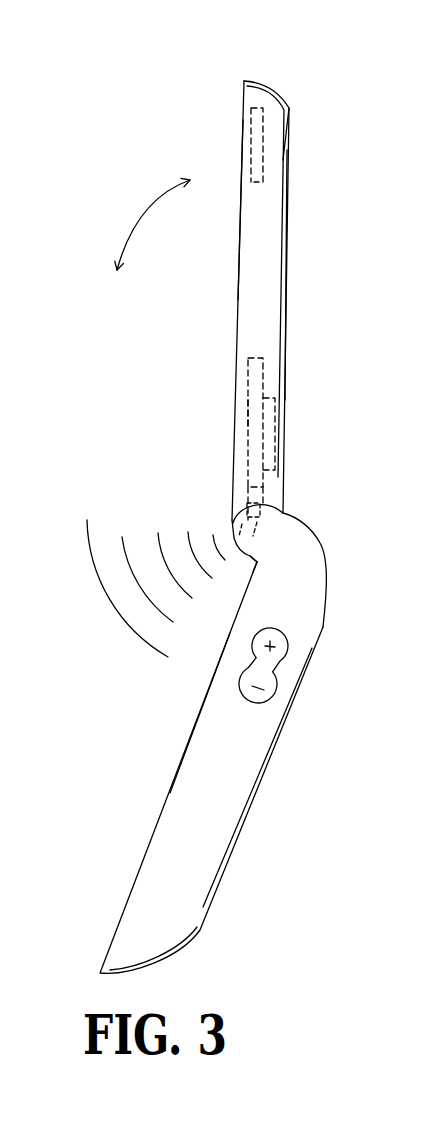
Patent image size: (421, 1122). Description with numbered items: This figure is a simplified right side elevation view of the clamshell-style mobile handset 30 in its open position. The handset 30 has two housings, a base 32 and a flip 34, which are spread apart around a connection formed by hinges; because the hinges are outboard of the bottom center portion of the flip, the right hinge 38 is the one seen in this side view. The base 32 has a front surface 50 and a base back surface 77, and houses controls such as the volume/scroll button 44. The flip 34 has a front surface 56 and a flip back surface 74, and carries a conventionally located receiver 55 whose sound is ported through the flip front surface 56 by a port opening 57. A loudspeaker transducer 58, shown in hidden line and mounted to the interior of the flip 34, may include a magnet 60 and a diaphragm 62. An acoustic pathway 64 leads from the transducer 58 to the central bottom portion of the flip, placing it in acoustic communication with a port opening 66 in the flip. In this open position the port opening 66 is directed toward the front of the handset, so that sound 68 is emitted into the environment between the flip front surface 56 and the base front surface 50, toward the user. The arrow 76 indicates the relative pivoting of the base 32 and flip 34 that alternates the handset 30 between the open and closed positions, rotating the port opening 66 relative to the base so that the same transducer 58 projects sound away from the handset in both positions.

The handset 30 is at (211, 77).
The base 32 is at (158, 905).
The flip 34 is at (275, 178).
The hinge 38 is at (268, 530).
The volume/scroll button 44 is at (270, 676).
The front surface 50 is at (168, 793).
The receiver 55 is at (268, 112).
The front surface 56 is at (238, 270).
The port opening 57 is at (248, 131).
The transducer 58 is at (248, 392).
The magnet 60 is at (275, 427).
The diaphragm 62 is at (250, 412).
The acoustic pathway 64 is at (237, 530).
The port opening 66 is at (250, 560).
The sound 68 is at (115, 607).
The flip back surface 74 is at (289, 302).
The arrow 76 is at (145, 212).
The base back surface 77 is at (250, 810).